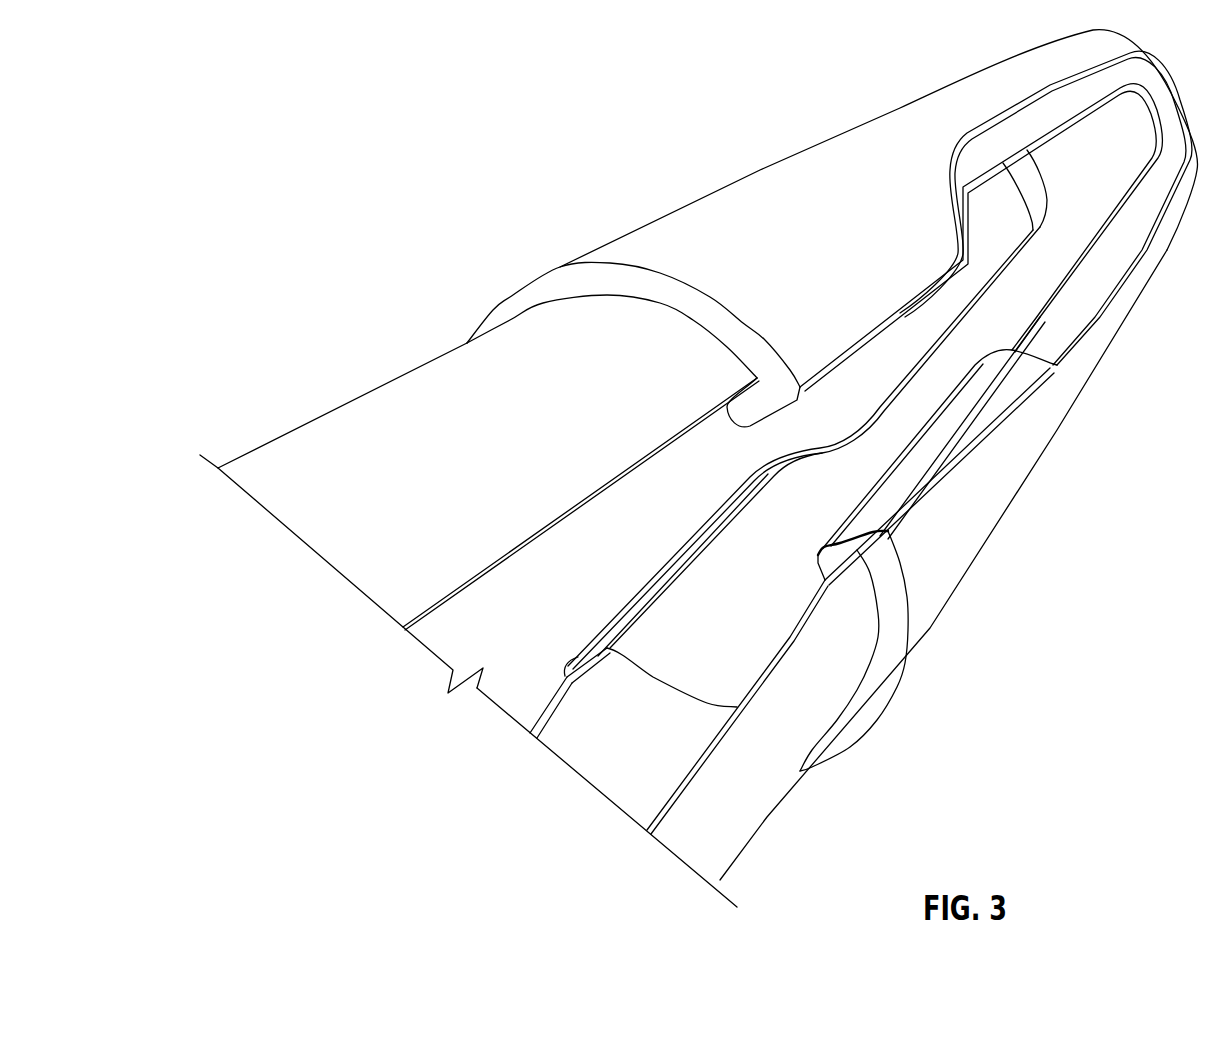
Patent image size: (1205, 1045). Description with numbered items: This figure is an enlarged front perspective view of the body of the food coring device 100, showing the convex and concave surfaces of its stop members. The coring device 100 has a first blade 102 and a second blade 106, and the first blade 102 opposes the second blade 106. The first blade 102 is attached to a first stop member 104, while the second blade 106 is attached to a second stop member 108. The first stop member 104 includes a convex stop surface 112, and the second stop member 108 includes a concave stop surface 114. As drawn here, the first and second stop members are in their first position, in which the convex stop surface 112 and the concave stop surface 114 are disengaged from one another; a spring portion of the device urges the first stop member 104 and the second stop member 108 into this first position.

The food coring device 100 is at (260, 160).
The first blade 102 is at (383, 398).
The first stop member 104 is at (738, 205).
The second blade 106 is at (695, 855).
The second stop member 108 is at (935, 597).
The convex stop surface 112 is at (808, 385).
The concave stop surface 114 is at (887, 523).